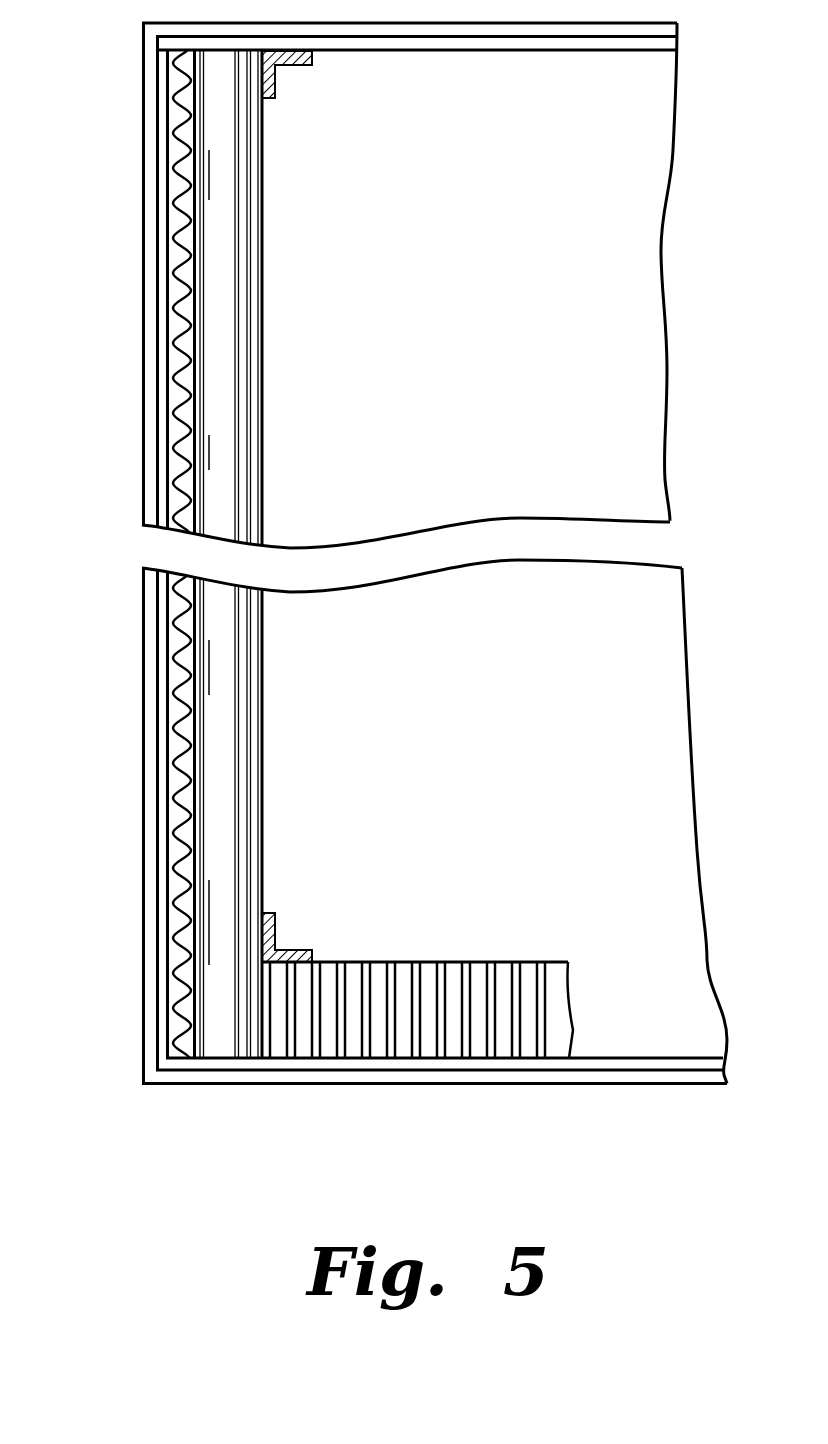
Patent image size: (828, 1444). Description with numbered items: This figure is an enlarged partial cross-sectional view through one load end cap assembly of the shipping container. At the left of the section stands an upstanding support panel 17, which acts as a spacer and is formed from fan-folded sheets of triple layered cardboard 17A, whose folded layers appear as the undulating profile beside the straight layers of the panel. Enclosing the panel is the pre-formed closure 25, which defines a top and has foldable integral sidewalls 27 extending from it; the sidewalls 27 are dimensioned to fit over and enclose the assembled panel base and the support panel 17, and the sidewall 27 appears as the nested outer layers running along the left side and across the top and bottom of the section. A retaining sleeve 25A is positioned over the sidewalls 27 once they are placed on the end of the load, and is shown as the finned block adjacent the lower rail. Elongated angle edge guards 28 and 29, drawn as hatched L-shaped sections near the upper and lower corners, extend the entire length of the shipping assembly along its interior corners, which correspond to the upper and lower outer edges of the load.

The support panel 17 is at (286, 283).
The triple layered cardboard 17A is at (180, 385).
The closure 25 is at (600, 847).
The retaining sleeve 25A is at (440, 1078).
The sidewall 27 is at (170, 1003).
The angle edge guard 28 is at (293, 70).
The angle edge guard 29 is at (278, 930).